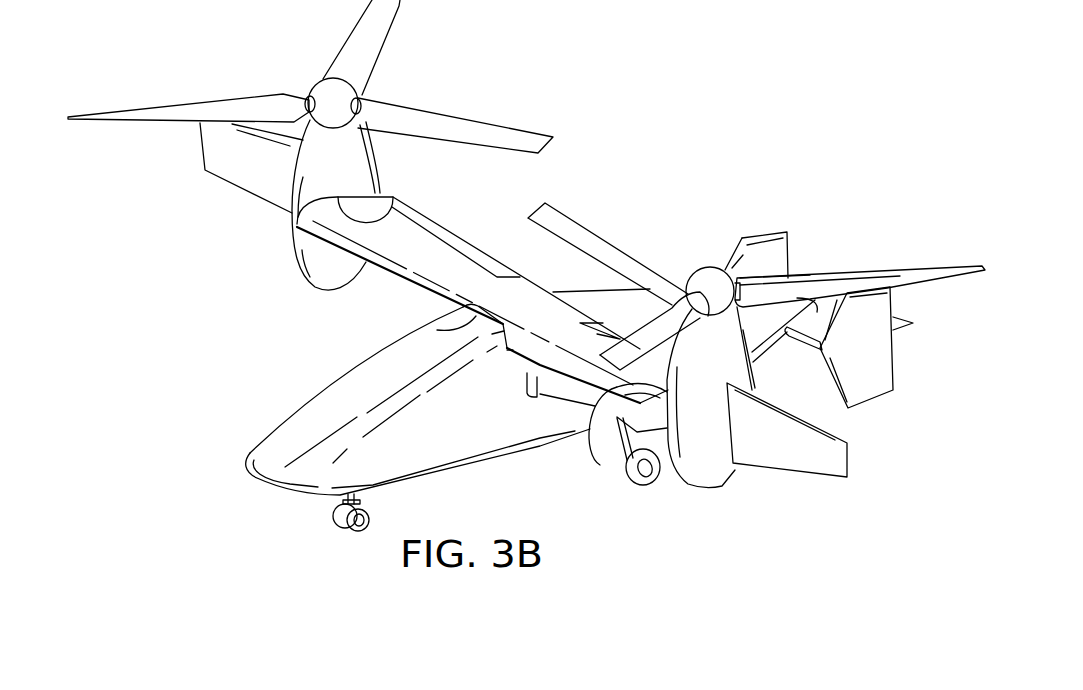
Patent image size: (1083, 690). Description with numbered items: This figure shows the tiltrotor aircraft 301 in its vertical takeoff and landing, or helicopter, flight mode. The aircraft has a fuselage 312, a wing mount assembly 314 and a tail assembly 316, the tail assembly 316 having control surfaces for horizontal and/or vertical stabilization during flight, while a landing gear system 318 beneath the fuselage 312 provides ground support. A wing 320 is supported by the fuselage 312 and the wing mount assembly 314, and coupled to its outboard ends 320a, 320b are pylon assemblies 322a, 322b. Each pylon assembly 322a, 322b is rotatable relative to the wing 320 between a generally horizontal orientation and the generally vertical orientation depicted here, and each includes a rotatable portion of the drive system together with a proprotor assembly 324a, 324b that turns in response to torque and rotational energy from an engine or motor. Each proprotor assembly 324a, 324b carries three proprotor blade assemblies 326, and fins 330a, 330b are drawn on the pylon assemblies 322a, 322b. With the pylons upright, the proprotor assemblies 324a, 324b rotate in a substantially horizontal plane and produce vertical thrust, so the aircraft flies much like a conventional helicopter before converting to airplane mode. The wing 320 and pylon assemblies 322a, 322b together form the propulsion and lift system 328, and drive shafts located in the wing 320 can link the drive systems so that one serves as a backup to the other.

The tiltrotor aircraft 301 is at (675, 131).
The fuselage 312 is at (290, 411).
The wing mount assembly 314 is at (437, 322).
The tail assembly 316 is at (763, 237).
The landing gear system 318 is at (350, 533).
The wing 320 is at (528, 297).
The outboard end of wing 320a is at (593, 462).
The outboard end of wing 320b is at (378, 207).
The pylon assembly 322a is at (708, 487).
The pylon assembly 322b is at (320, 290).
The proprotor assembly 324a is at (710, 268).
The proprotor assembly 324b is at (326, 80).
The proprotor blade assemblies 326 is at (168, 105).
The propulsion and lift system 328 is at (459, 283).
The first nacelle fin 330a is at (848, 463).
The second nacelle fin 330b is at (232, 183).